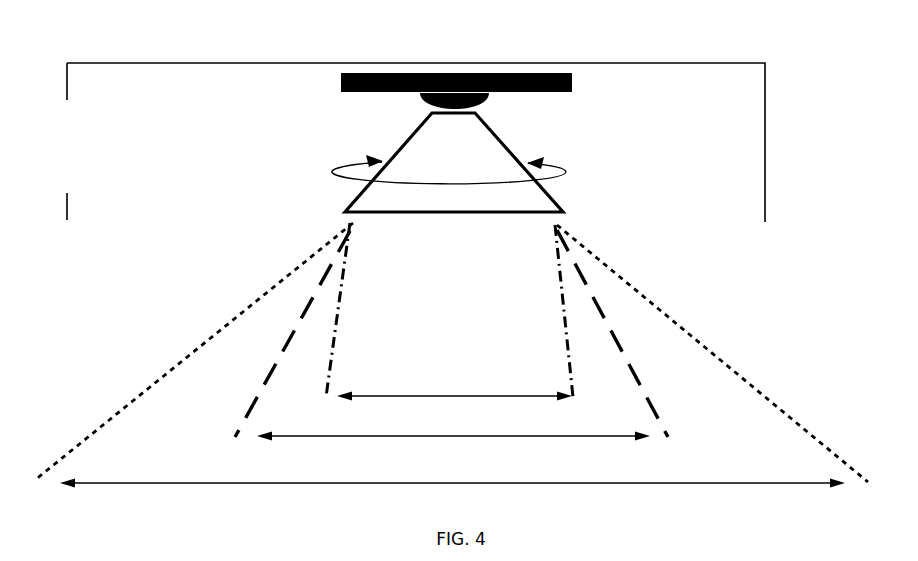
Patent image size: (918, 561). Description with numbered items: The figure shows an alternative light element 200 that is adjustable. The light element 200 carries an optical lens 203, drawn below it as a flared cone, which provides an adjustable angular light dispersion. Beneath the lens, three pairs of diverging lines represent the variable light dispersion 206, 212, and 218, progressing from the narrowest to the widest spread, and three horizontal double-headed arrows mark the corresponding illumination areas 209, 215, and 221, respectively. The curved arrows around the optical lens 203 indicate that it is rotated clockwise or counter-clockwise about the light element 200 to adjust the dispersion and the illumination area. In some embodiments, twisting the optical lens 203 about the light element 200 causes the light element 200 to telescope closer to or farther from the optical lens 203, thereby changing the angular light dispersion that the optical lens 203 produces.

The light element 200 is at (474, 73).
The optical lens 203 is at (350, 198).
The variable light dispersion 206 is at (335, 328).
The illumination area 209 is at (454, 388).
The variable light dispersion 212 is at (270, 373).
The illumination area 215 is at (453, 429).
The variable light dispersion 218 is at (233, 318).
The illumination area 221 is at (452, 477).